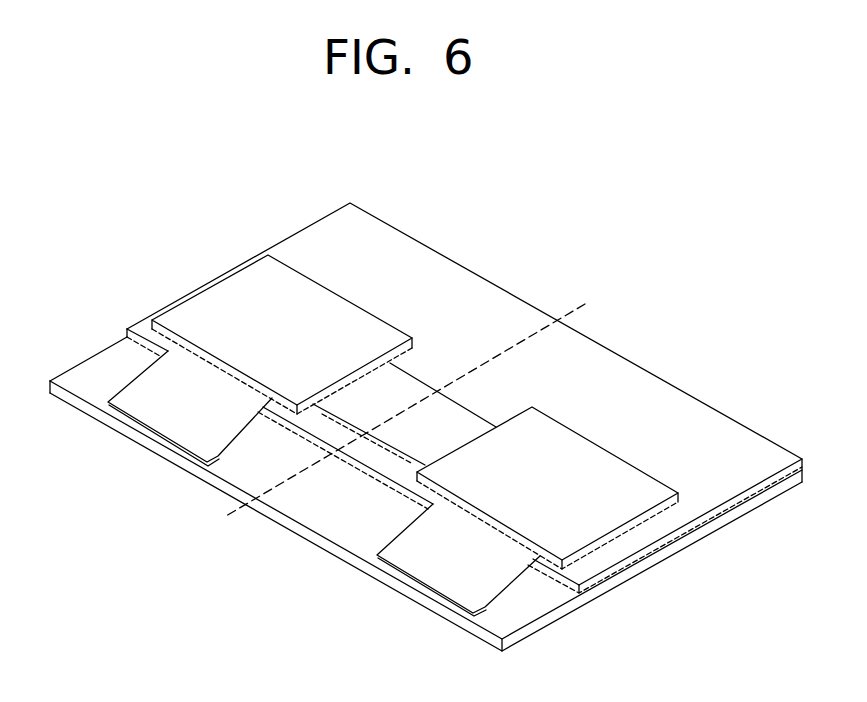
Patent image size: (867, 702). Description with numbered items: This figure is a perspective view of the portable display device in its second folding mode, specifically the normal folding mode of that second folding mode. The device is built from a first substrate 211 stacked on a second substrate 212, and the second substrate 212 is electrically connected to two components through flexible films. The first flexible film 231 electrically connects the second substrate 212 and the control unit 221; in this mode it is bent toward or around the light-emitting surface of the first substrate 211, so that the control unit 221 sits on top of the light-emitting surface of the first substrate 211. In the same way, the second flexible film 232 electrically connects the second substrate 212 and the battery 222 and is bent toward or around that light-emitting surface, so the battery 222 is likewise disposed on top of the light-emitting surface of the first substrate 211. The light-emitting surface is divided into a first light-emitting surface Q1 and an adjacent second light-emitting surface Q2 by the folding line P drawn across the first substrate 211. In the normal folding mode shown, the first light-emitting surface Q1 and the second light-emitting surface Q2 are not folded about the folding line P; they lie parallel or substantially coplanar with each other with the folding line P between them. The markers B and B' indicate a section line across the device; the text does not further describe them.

The first substrate 211 is at (318, 221).
The second substrate 212 is at (93, 357).
The control unit 221 is at (230, 297).
The battery 222 is at (620, 507).
The first flexible film 231 is at (133, 418).
The second flexible film 232 is at (413, 583).
The section line start B is at (137, 300).
The section line end B' is at (636, 592).
The folding line P is at (589, 298).
The first light-emitting surface Q1 is at (428, 262).
The second light-emitting surface Q2 is at (673, 405).